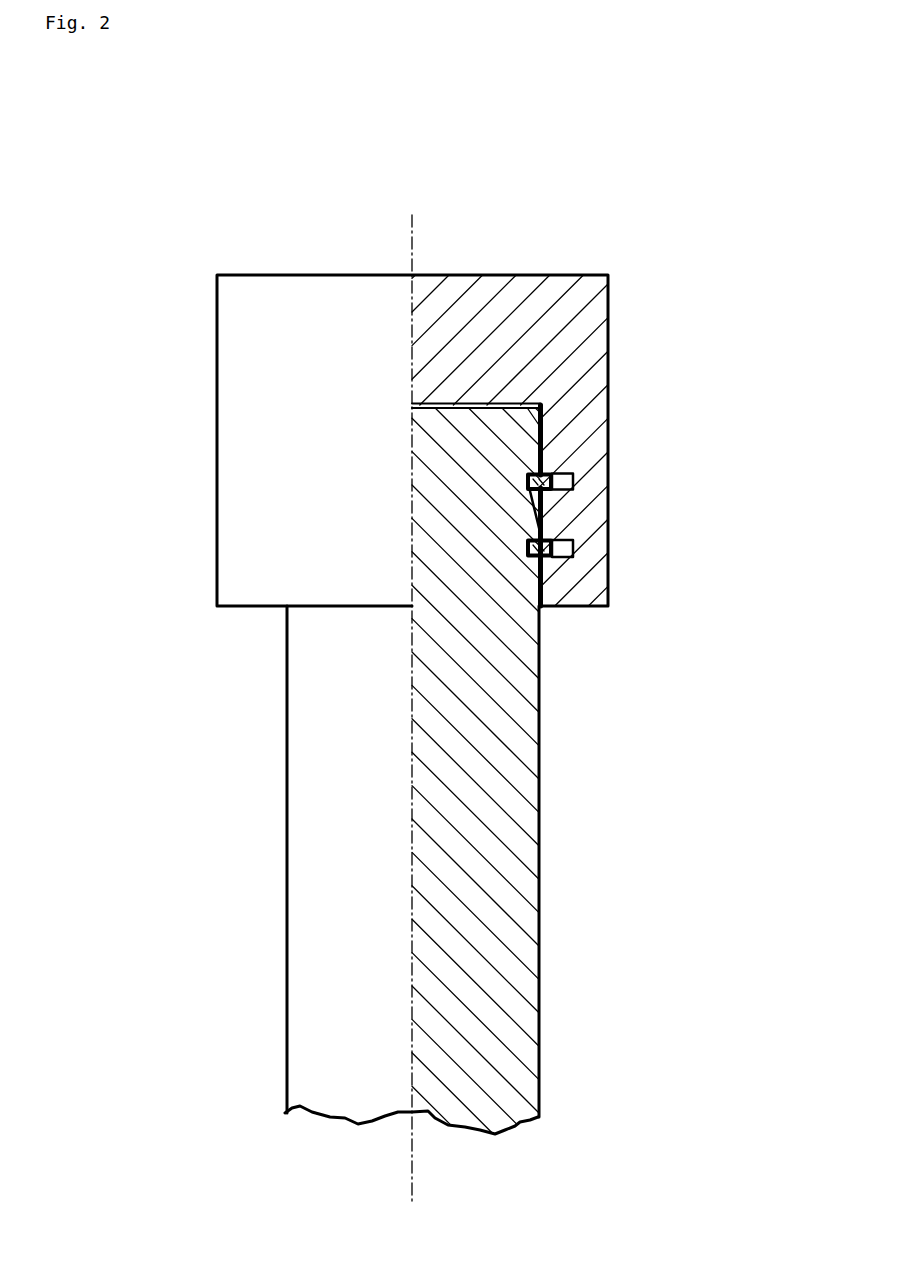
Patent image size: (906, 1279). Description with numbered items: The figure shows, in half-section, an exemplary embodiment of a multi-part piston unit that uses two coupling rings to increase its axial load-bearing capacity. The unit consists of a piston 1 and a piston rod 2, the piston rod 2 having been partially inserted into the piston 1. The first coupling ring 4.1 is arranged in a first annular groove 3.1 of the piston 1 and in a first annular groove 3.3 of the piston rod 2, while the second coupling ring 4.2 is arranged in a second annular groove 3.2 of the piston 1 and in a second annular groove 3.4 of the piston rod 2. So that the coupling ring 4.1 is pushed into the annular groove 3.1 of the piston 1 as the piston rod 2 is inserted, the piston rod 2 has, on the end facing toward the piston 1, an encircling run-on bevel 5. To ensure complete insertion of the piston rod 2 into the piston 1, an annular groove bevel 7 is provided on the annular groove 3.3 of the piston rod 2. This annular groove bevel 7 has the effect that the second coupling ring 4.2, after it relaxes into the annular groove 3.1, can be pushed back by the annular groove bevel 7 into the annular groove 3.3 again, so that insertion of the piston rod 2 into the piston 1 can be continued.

The piston 1 is at (583, 325).
The piston rod 2 is at (470, 820).
The first annular groove of the piston 3.1 is at (570, 488).
The second annular groove of the piston 3.2 is at (565, 550).
The first annular groove of the piston rod 3.3 is at (527, 480).
The second annular groove of the piston rod 3.4 is at (527, 552).
The coupling ring 4.1 is at (553, 473).
The coupling ring 4.2 is at (555, 541).
The run-on bevel 5 is at (543, 406).
The annular groove bevel 7 is at (538, 474).